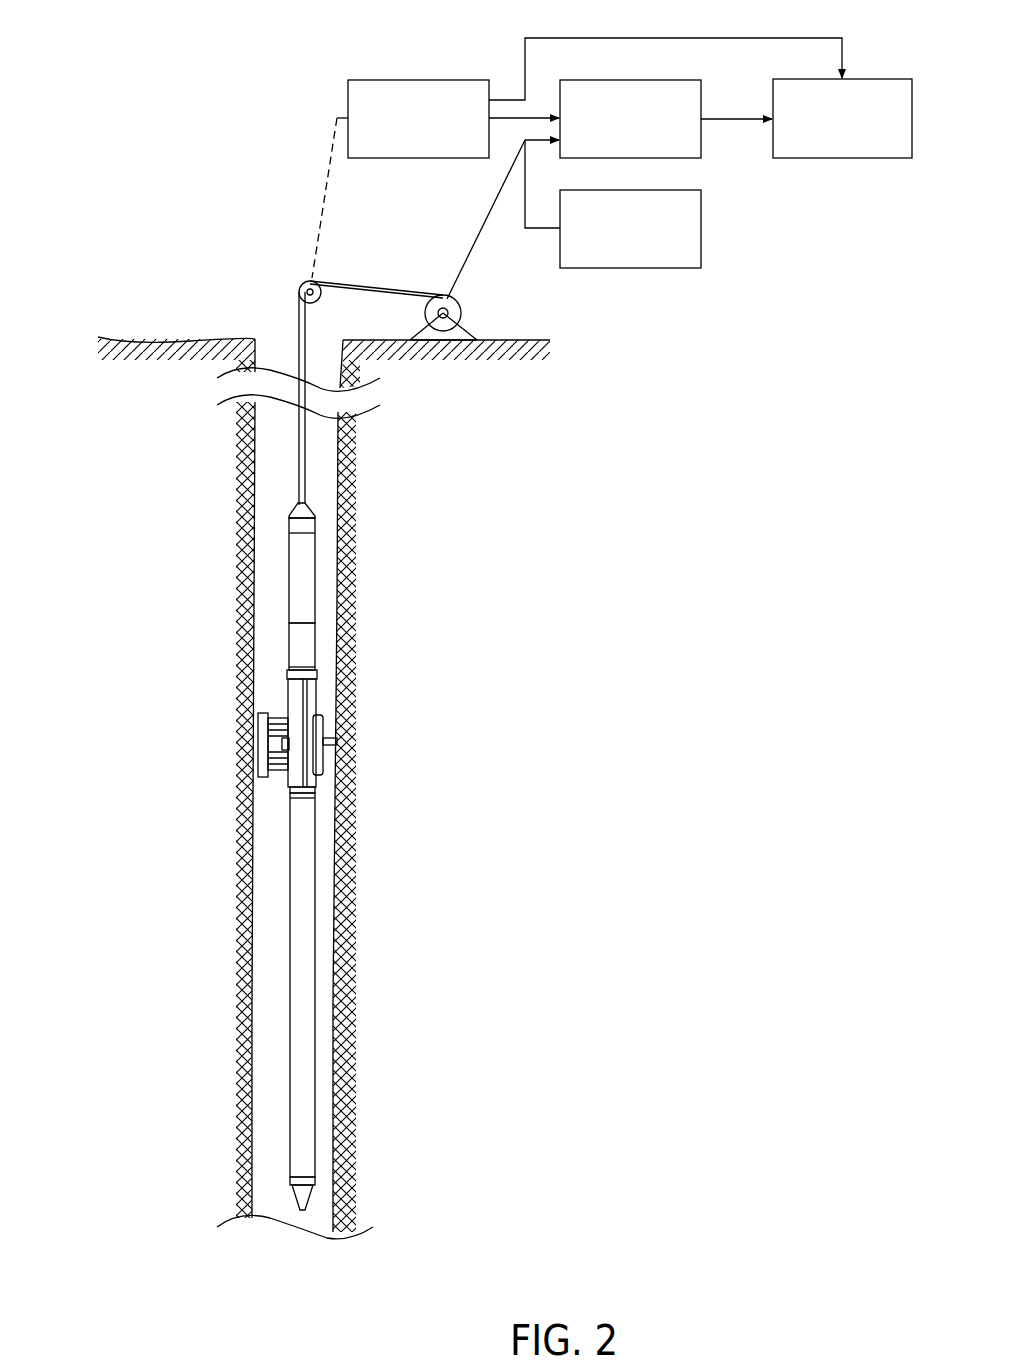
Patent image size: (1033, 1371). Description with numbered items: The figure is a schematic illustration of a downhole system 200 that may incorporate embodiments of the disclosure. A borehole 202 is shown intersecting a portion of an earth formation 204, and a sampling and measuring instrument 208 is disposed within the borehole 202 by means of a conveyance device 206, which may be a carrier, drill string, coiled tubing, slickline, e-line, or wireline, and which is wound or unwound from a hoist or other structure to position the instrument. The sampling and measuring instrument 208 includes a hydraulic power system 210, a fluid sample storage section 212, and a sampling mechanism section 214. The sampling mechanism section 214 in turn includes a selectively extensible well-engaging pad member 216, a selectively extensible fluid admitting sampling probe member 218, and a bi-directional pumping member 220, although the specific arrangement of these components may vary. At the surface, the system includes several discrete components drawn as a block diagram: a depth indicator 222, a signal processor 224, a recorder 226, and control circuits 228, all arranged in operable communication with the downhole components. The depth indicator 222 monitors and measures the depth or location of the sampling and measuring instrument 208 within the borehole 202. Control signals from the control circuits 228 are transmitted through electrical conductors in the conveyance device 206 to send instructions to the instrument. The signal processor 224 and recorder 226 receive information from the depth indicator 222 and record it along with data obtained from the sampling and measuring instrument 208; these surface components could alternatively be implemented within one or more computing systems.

The downhole system 200 is at (92, 99).
The borehole 202 is at (277, 480).
The earth formation 204 is at (219, 832).
The conveyance device 206 is at (338, 442).
The sampling and measuring instrument 208 is at (322, 540).
The hydraulic power system 210 is at (317, 603).
The fluid sample storage section 212 is at (288, 1000).
The sampling mechanism section 214 is at (317, 687).
The well-engaging pad member 216 is at (258, 741).
The fluid admitting sampling probe member 218 is at (323, 740).
The bi-directional pumping member 220 is at (287, 648).
The depth indicator 222 is at (420, 78).
The signal processor 224 is at (633, 78).
The recorder 226 is at (875, 79).
The control circuits 228 is at (630, 268).